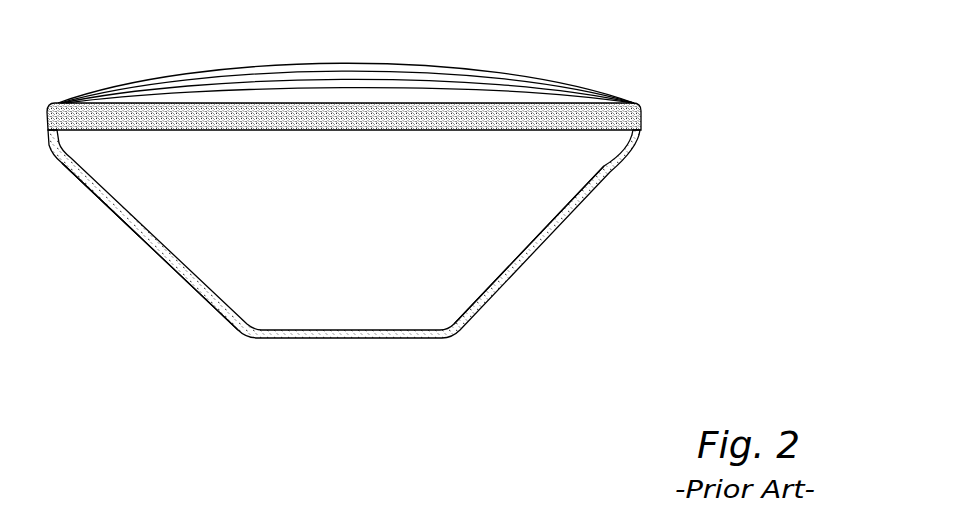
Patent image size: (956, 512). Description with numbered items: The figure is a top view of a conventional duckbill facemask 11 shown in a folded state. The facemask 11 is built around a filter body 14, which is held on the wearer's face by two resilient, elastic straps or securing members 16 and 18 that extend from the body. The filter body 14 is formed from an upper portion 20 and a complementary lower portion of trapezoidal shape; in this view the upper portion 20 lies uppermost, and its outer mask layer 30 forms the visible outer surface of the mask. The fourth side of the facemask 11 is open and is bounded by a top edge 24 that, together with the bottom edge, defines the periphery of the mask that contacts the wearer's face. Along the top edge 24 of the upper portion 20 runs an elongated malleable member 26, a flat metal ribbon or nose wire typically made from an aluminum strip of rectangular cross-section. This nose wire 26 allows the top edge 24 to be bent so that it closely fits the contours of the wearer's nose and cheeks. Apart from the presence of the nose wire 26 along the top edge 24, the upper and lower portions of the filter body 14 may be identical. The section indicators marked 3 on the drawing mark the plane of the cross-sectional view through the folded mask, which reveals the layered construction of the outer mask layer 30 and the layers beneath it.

The facemask 11 is at (142, 252).
The filter body 14 is at (500, 288).
The securing member 16 is at (242, 66).
The securing member 18 is at (478, 72).
The upper portion 20 is at (548, 170).
The top edge 24 is at (420, 103).
The malleable member 26 is at (281, 131).
The outer mask layer 30 is at (237, 267).
The section line 3- 3 is at (331, 53).